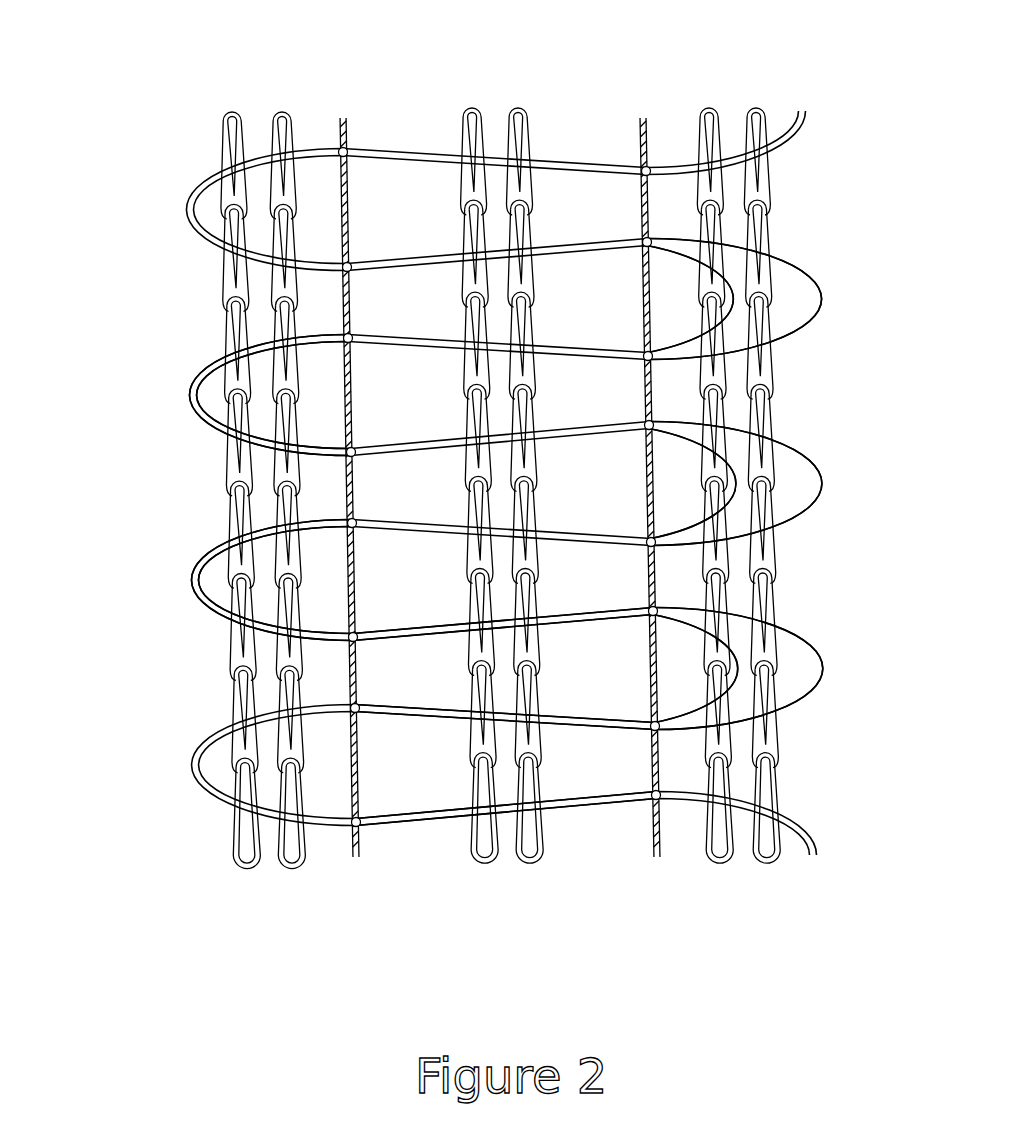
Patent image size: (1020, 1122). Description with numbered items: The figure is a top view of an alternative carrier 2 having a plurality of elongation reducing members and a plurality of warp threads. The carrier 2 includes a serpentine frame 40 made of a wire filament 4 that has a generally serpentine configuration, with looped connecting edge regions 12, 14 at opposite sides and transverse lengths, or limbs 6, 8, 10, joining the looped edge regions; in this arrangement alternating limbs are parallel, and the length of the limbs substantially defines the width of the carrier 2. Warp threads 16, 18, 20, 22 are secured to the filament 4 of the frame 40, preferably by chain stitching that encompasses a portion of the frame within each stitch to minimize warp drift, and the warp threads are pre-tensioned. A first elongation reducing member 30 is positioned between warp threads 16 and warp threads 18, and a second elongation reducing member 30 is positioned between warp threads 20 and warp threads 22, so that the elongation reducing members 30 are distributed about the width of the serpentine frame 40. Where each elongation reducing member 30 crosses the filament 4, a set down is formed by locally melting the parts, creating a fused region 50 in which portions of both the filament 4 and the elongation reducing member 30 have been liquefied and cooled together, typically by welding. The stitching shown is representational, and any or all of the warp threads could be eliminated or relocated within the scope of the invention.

The carrier 2 is at (493, 515).
The filament 4 is at (557, 158).
The limb 6 is at (384, 818).
The limb 8 is at (625, 722).
The limb 10 is at (383, 634).
The looped connecting edge region 12 is at (111, 582).
The looped connecting edge region 14 is at (894, 667).
The warp threads 16 is at (247, 872).
The warp threads 18 is at (485, 870).
The warp threads 20 is at (530, 870).
The warp threads 22 is at (720, 870).
The elongation reducing member 30 is at (730, 42).
The serpentine frame 40 is at (797, 244).
The fused region 50 is at (500, 487).